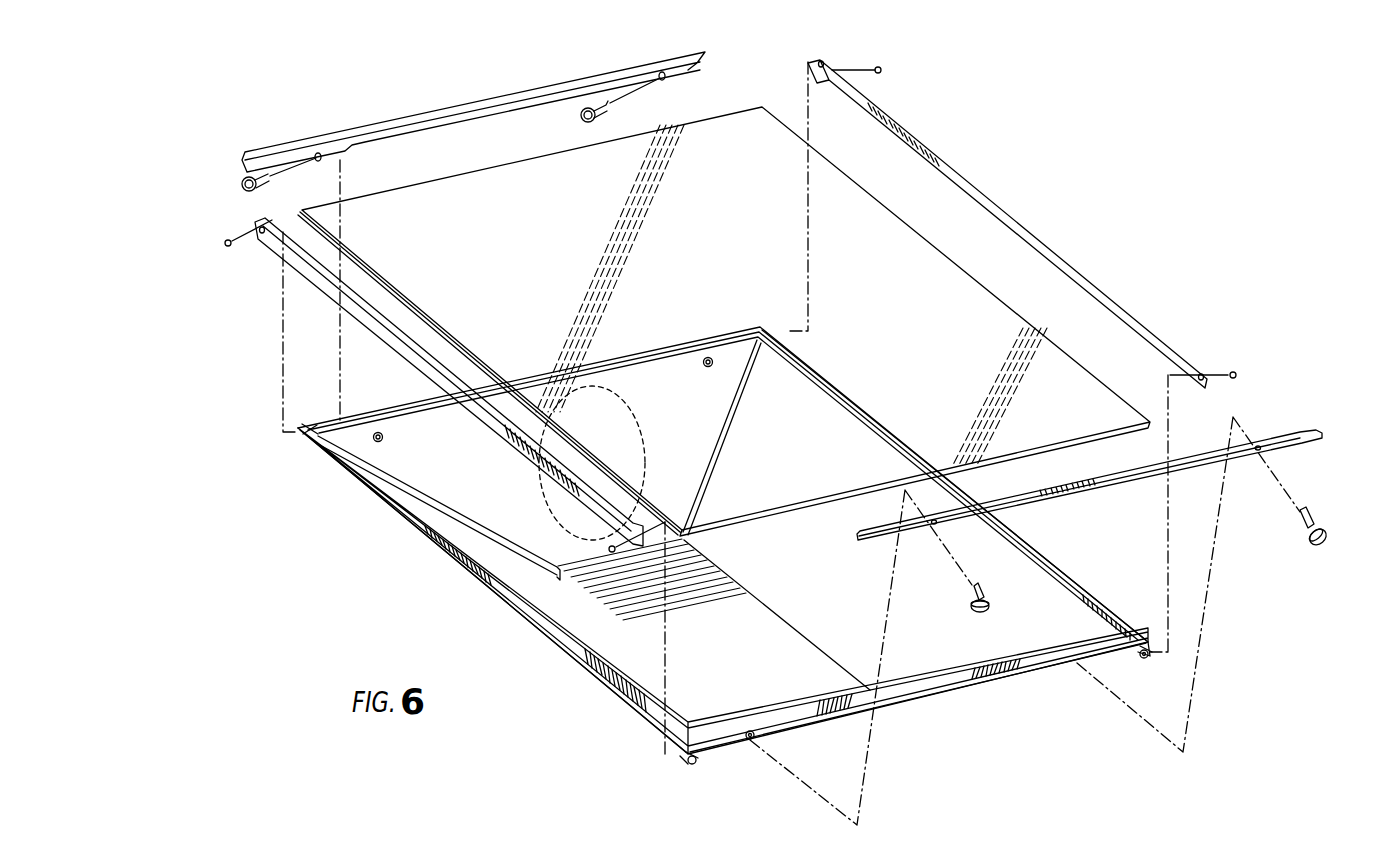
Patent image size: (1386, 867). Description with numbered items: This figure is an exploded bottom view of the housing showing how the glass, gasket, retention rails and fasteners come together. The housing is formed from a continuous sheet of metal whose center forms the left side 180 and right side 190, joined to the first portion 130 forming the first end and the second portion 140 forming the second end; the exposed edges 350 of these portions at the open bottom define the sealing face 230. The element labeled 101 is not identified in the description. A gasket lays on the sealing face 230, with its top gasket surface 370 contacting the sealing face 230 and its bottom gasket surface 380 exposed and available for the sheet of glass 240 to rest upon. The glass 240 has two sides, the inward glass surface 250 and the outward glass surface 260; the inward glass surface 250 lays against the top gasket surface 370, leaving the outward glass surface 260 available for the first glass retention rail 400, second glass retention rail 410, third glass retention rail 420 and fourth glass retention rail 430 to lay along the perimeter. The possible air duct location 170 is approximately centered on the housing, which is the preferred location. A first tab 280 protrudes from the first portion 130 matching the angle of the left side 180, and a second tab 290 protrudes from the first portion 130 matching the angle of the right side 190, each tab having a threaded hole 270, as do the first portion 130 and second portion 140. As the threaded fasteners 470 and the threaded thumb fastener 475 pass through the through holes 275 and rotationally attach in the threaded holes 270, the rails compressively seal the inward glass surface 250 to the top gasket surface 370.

The frame assembly 101 is at (811, 569).
The first portion 130 is at (995, 687).
The second portion 140 is at (691, 454).
The possible air duct location 170 is at (614, 424).
The left side 180 is at (1050, 550).
The right side 190 is at (505, 615).
The sealing face 230 is at (672, 357).
The sheet of glass 240 is at (724, 286).
The inward glass surface 250 is at (527, 162).
The outward glass surface 260 is at (472, 193).
The threaded hole 270 is at (712, 359).
The through holes 275 is at (665, 79).
The first tab 280 is at (1176, 704).
The second tab 290 is at (711, 794).
The exposed edges 350 is at (923, 697).
The top gasket surface 370 is at (310, 432).
The bottom gasket surface 380 is at (1092, 612).
The first glass retention rail 400 is at (1010, 216).
The second glass retention rail 410 is at (1097, 477).
The third glass retention rail 420 is at (426, 358).
The fourth glass retention rail 430 is at (503, 103).
The threaded fasteners 470 is at (882, 70).
The threaded thumb fastener 475 is at (581, 115).